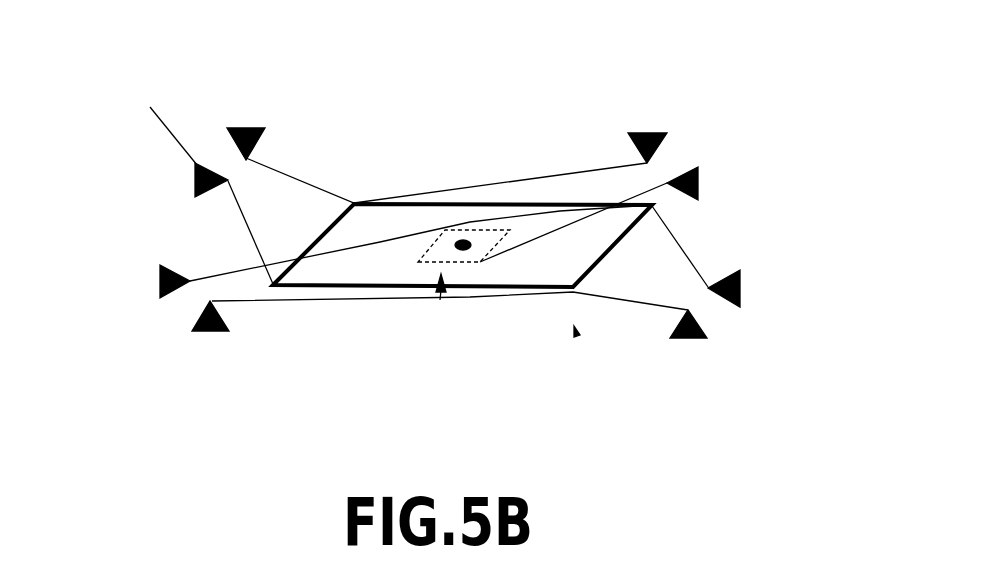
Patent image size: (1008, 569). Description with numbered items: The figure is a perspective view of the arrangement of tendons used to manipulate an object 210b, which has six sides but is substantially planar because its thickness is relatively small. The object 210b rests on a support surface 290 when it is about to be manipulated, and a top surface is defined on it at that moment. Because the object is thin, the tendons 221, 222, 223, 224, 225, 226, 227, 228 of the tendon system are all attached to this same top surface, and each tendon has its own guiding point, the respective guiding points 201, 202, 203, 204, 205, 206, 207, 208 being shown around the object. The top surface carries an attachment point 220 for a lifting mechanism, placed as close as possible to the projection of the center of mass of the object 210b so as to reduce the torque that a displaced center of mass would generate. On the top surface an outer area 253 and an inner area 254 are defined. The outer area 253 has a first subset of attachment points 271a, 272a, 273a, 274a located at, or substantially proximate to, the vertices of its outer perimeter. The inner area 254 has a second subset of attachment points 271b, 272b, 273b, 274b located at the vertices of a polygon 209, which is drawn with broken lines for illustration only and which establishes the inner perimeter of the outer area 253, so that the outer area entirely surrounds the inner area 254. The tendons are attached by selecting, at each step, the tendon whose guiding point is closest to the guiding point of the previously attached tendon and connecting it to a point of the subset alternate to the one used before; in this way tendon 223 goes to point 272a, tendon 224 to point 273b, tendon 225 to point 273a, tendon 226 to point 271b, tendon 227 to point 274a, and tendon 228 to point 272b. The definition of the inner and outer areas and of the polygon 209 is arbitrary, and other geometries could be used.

The guiding point 201 is at (177, 136).
The guiding point 202 is at (238, 128).
The guiding point 203 is at (650, 163).
The guiding point 204 is at (700, 182).
The guiding point 205 is at (742, 290).
The guiding point 206 is at (705, 330).
The guiding point 207 is at (196, 330).
The guiding point 208 is at (160, 281).
The polygon 209 is at (455, 262).
The object 210b is at (417, 260).
The attachment point for a lifting mechanism 220 is at (463, 240).
The tendon 221 is at (238, 203).
The tendon 222 is at (297, 173).
The tendon 223 is at (665, 133).
The tendon 224 is at (667, 168).
The tendon 225 is at (668, 228).
The tendon 226 is at (606, 293).
The tendon 227 is at (258, 300).
The tendon 228 is at (272, 284).
The outer area 253 is at (355, 285).
The inner area 254 is at (440, 300).
The attachment point 271a is at (272, 280).
The attachment point 271b is at (417, 262).
The attachment point 272a is at (353, 202).
The attachment point 272b is at (445, 230).
The attachment point 273a is at (655, 210).
The attachment point 273b is at (508, 230).
The attachment point 274a is at (575, 288).
The attachment point 274b is at (468, 230).
The support surface 290 is at (577, 336).